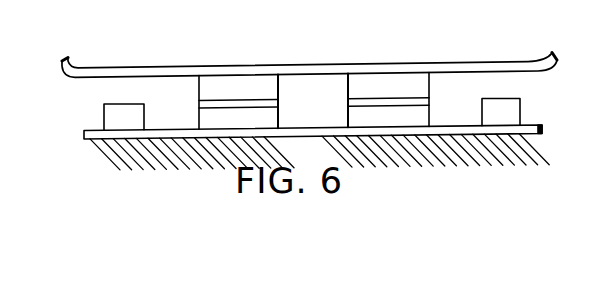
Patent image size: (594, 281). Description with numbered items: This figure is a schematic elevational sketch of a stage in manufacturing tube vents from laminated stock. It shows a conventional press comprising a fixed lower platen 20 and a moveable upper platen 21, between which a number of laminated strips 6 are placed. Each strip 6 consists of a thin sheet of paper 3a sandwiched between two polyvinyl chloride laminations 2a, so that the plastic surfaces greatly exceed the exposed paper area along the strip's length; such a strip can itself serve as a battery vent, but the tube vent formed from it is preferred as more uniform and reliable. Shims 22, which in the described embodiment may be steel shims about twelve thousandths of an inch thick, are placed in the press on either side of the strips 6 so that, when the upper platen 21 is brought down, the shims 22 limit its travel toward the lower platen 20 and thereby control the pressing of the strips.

The moveable upper platen 21 is at (144, 66).
The fixed lower platen 20 is at (315, 134).
The shims 22 is at (104, 112).
The polyvinyl chloride laminations 2a is at (199, 88).
The sheet of paper 3a is at (238, 100).
The strip 6 is at (295, 84).